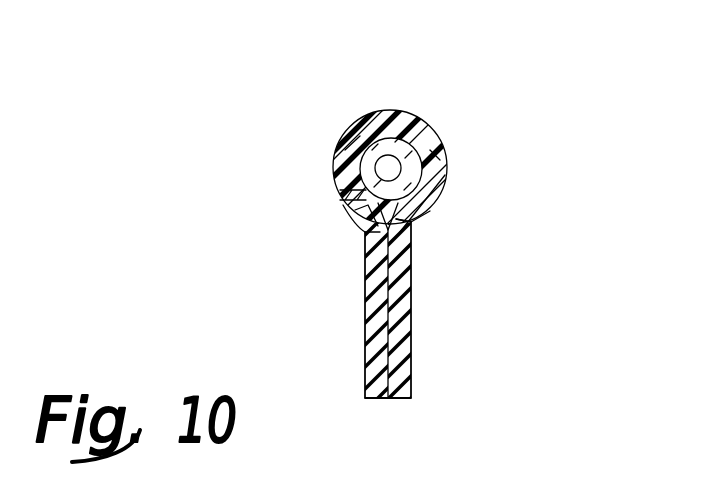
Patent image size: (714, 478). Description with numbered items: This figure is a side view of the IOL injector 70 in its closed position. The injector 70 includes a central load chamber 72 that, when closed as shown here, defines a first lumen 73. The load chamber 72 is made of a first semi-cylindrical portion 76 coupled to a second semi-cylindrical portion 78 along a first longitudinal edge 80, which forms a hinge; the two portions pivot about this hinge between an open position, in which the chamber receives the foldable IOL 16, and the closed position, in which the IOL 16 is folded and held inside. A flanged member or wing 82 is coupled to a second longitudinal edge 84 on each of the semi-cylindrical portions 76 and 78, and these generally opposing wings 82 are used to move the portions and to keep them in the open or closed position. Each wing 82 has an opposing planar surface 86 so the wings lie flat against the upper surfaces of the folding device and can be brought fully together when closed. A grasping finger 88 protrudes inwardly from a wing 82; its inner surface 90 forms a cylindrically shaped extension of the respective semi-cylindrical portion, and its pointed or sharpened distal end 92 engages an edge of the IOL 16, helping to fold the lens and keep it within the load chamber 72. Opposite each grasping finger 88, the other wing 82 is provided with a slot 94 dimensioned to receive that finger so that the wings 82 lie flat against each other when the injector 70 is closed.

The IOL injector 70 is at (455, 115).
The first longitudinal edge 80 is at (391, 138).
The foldable IOL 16 is at (350, 127).
The central load chamber 72 is at (358, 168).
The first semi-cylindrical portion 76 is at (350, 157).
The second semi-cylindrical portion 78 is at (450, 157).
The first lumen 73 is at (423, 175).
The inner surface 90 is at (342, 200).
The pointed distal end 92 is at (358, 207).
The slot 94 is at (367, 233).
The second longitudinal edge 84 is at (362, 224).
The grasping finger 88 is at (430, 218).
The wing 82 is at (365, 322).
The planar surface 86 is at (388, 398).